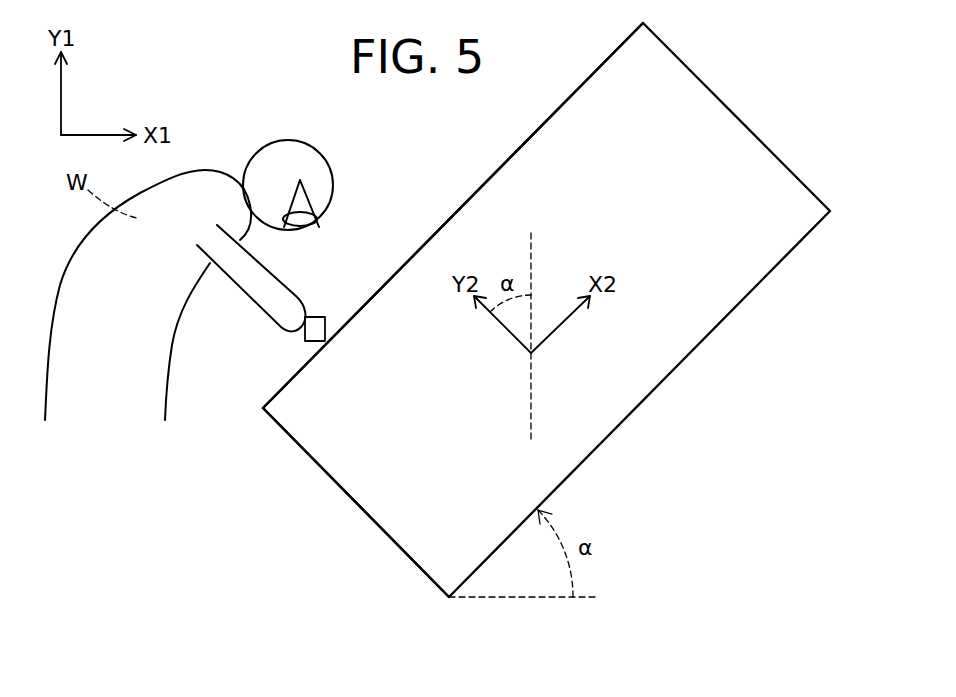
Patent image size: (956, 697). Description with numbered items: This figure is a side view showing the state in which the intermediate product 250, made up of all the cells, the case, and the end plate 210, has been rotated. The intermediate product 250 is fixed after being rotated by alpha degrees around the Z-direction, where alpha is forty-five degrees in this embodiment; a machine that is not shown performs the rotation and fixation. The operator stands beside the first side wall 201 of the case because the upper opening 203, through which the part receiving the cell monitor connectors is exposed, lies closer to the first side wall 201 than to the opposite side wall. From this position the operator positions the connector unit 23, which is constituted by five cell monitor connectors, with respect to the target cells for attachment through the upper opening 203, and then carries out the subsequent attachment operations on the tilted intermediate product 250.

The connector unit 23 is at (317, 327).
The intermediate product 250 is at (742, 105).
The upper opening 203 is at (288, 373).
The end plate 210 is at (367, 462).
The first side wall 201 is at (368, 518).